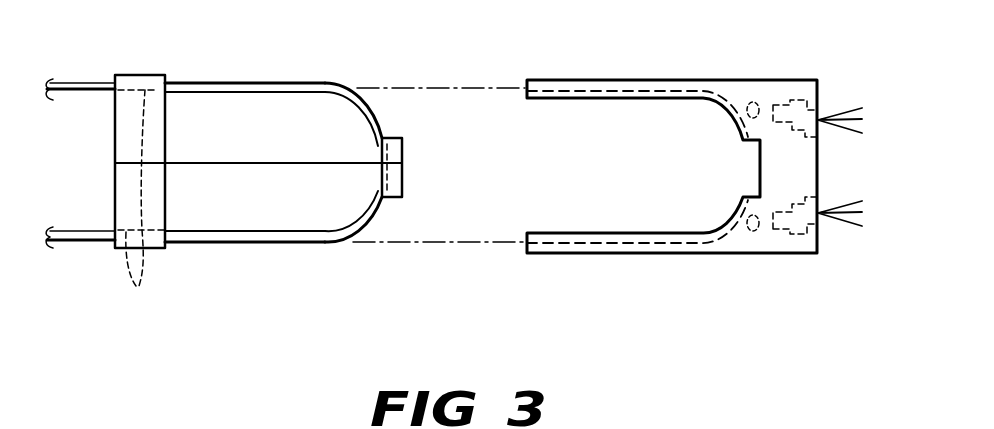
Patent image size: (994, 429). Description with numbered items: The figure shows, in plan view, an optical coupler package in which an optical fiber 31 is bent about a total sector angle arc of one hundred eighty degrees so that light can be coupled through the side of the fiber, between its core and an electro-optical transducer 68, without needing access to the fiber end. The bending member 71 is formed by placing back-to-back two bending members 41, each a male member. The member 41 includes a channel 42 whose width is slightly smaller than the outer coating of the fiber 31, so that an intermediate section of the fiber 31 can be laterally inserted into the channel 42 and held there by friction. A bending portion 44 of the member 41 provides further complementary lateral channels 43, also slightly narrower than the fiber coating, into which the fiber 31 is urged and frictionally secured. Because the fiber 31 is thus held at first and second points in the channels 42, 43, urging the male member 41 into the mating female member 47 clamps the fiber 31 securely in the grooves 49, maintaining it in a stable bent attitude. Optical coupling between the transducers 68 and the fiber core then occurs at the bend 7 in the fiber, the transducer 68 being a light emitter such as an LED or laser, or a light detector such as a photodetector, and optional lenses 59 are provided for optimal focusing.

The bend 7 is at (378, 110).
The optical fiber 31 is at (83, 230).
The bending member 41 is at (282, 135).
The channel 42 is at (141, 291).
The complementary channel 43 is at (403, 177).
The bending portion 44 is at (379, 212).
The female member 47 is at (577, 76).
The groove 49 is at (585, 100).
The lens 59 is at (750, 104).
The transducer 68 is at (792, 102).
The bending member 71 is at (275, 78).